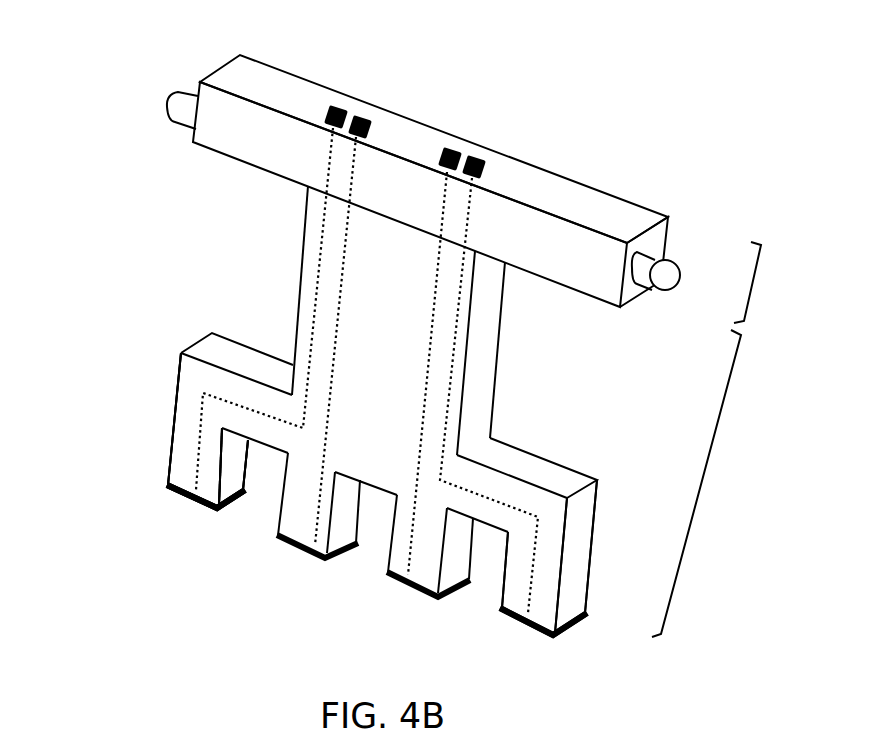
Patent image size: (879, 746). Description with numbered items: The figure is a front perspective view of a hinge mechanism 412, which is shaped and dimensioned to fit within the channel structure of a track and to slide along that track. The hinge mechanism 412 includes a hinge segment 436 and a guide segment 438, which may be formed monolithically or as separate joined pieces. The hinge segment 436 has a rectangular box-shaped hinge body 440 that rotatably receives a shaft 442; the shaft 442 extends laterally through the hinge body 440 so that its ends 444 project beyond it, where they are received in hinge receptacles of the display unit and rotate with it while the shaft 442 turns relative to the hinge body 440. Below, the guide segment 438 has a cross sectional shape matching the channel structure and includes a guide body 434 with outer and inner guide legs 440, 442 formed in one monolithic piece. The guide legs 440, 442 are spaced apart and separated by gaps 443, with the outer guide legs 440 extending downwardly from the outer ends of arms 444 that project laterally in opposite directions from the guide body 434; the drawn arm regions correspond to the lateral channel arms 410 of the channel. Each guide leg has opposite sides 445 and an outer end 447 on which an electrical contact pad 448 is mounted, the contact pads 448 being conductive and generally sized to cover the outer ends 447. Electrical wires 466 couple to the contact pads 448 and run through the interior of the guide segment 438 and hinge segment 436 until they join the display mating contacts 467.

The hinge mechanism 412 is at (71, 96).
The shaft / inner guide leg 442 is at (175, 78).
The shaft end / arm 444 is at (172, 98).
The display mating contact 467 is at (338, 108).
The hinge body / outer guide leg 440 is at (433, 214).
The electrical wire 466 is at (322, 253).
The guide body 434 is at (401, 325).
The hinge segment 436 is at (754, 285).
The guide segment 438 is at (705, 486).
The side 445 is at (235, 463).
The gap 443 is at (264, 495).
The lateral channel arm 410 is at (510, 493).
The outer end 447 is at (517, 613).
The electrical contact pad 448 is at (538, 631).